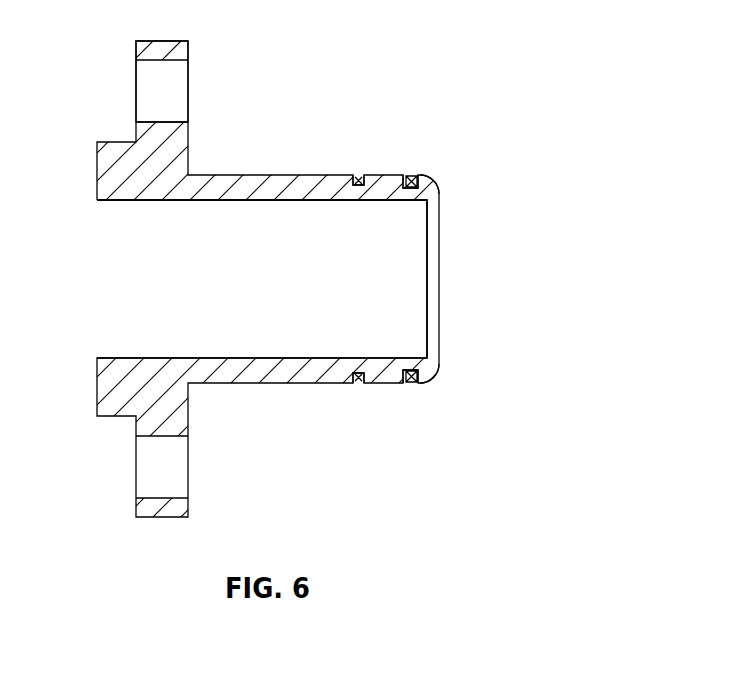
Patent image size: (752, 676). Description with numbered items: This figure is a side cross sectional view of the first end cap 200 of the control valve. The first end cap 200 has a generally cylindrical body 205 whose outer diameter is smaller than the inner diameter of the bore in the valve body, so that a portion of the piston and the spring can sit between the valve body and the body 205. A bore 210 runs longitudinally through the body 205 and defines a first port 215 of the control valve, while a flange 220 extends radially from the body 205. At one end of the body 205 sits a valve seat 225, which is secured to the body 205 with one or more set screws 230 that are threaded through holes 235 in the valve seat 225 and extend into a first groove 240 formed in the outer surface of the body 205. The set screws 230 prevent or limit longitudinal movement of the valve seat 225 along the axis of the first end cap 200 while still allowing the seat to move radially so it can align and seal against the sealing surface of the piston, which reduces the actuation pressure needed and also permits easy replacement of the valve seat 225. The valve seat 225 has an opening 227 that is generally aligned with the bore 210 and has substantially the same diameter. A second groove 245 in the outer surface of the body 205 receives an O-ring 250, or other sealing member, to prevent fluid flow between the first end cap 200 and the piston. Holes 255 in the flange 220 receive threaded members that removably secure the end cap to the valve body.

The first end cap 200 is at (520, 125).
The body 205 is at (235, 185).
The bore 210 is at (165, 203).
The first port 215 is at (285, 291).
The flange 220 is at (140, 55).
The valve seat 225 is at (433, 373).
The opening 227 is at (440, 210).
The set screws 230 is at (413, 176).
The holes 235 is at (406, 395).
The first groove 240 is at (434, 188).
The second groove 245 is at (353, 396).
The O-ring 250 is at (358, 176).
The holes 255 is at (142, 88).